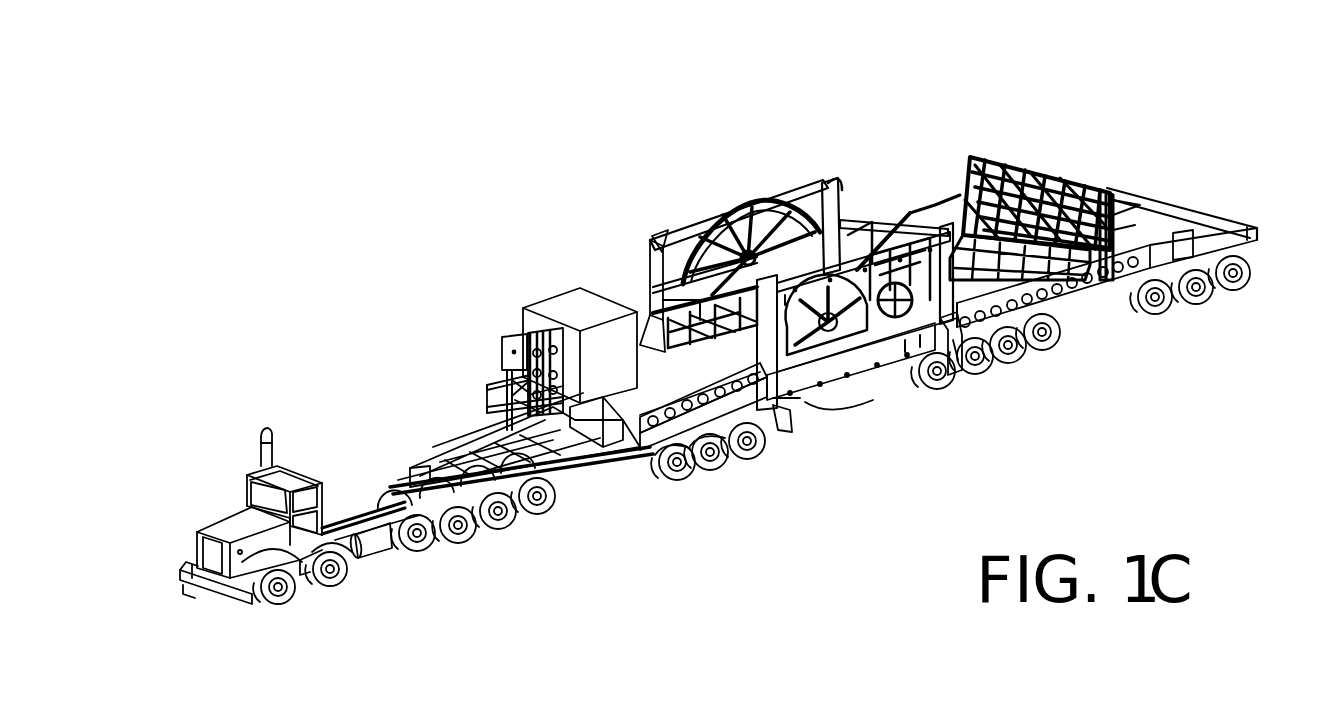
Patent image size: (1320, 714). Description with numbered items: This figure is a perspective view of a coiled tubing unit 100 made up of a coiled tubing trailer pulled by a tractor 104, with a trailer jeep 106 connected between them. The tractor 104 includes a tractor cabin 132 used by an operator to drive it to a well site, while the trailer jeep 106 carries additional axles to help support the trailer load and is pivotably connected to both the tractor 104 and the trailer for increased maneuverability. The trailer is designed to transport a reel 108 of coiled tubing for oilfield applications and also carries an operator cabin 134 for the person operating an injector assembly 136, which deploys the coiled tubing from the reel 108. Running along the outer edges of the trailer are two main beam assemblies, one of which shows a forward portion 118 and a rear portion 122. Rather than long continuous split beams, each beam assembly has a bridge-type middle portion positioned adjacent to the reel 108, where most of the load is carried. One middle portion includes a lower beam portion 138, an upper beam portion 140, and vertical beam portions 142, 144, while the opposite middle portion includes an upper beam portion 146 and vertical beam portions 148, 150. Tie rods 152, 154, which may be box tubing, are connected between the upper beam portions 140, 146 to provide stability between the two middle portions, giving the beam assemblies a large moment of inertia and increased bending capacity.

The coiled tubing unit 100 is at (958, 47).
The tractor 104 is at (397, 572).
The trailer jeep 106 is at (705, 487).
The reel 108 is at (790, 215).
The forward portion 118 is at (745, 462).
The rear portion 122 is at (1085, 305).
The tractor cabin 132 is at (258, 468).
The operator cabin 134 is at (532, 303).
The injector assembly 136 is at (1070, 155).
The lower beam portion 138 is at (893, 380).
The upper beam portion 140 is at (855, 215).
The vertical beam portion 142 is at (712, 228).
The vertical beam portion 144 is at (965, 380).
The upper beam portion 146 is at (770, 197).
The vertical beam portion 148 is at (642, 273).
The vertical beam portion 150 is at (843, 215).
The tie rod 152 is at (660, 240).
The tie rod 154 is at (873, 222).